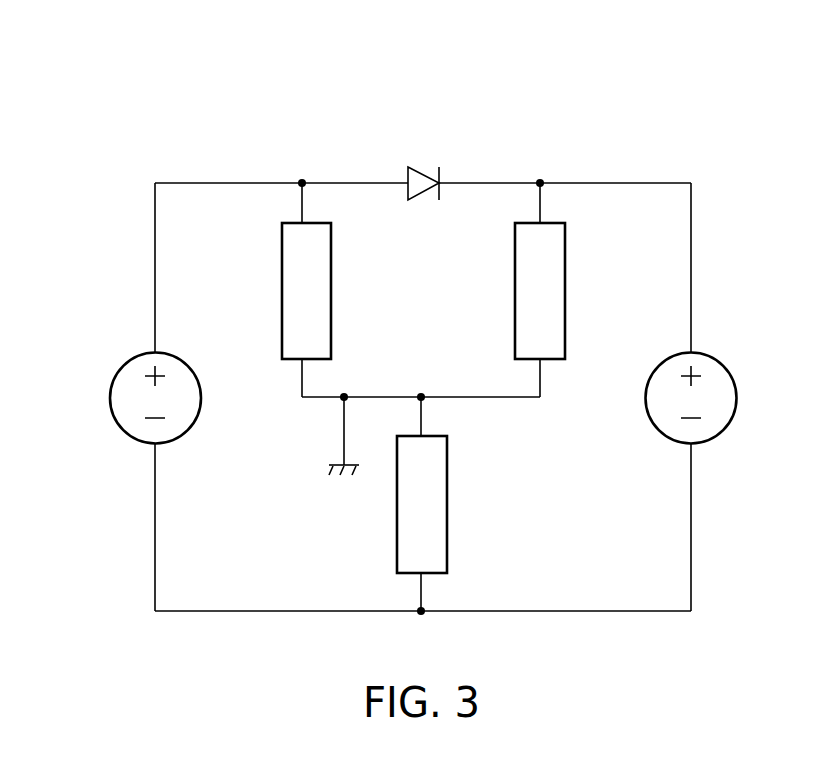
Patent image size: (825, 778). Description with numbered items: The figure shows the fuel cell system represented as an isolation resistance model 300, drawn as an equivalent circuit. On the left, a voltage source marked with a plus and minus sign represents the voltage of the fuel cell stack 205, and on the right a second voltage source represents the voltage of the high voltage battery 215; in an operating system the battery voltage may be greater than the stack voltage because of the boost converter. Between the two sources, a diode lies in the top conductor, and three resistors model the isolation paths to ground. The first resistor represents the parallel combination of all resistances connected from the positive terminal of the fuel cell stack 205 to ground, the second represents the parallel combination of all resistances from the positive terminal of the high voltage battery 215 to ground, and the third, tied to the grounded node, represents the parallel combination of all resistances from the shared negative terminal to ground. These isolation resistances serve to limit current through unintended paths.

The isolation resistance model 300 is at (645, 142).
The fuel cell stack 205 is at (133, 356).
The high voltage battery 215 is at (708, 354).